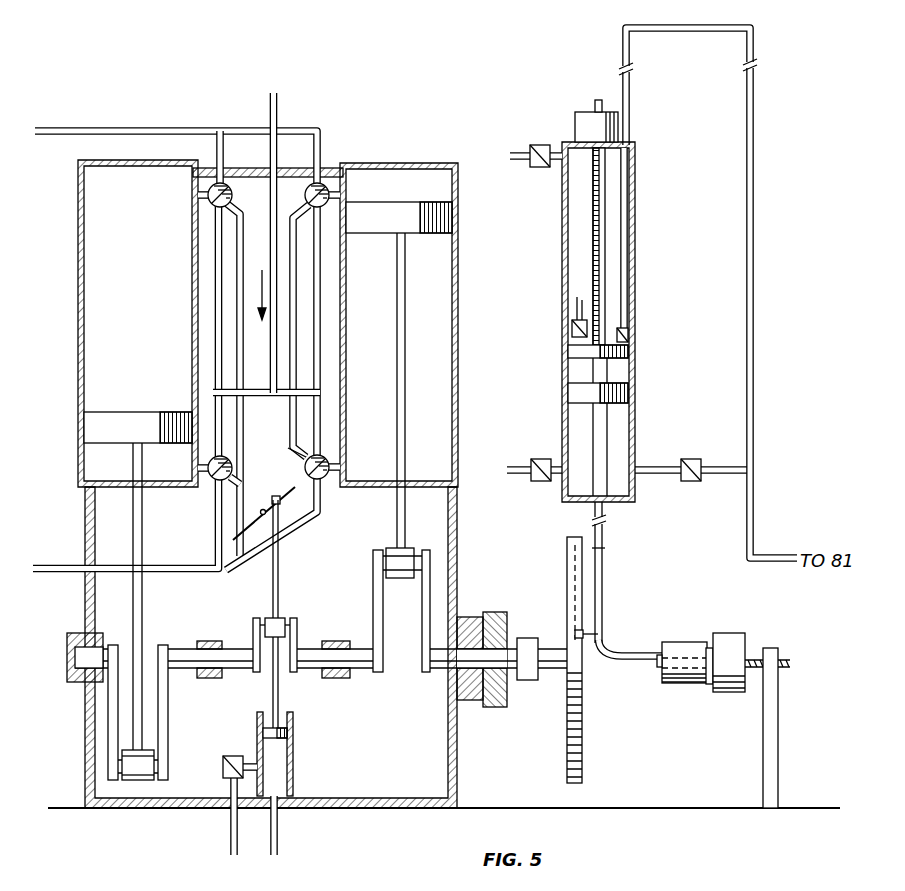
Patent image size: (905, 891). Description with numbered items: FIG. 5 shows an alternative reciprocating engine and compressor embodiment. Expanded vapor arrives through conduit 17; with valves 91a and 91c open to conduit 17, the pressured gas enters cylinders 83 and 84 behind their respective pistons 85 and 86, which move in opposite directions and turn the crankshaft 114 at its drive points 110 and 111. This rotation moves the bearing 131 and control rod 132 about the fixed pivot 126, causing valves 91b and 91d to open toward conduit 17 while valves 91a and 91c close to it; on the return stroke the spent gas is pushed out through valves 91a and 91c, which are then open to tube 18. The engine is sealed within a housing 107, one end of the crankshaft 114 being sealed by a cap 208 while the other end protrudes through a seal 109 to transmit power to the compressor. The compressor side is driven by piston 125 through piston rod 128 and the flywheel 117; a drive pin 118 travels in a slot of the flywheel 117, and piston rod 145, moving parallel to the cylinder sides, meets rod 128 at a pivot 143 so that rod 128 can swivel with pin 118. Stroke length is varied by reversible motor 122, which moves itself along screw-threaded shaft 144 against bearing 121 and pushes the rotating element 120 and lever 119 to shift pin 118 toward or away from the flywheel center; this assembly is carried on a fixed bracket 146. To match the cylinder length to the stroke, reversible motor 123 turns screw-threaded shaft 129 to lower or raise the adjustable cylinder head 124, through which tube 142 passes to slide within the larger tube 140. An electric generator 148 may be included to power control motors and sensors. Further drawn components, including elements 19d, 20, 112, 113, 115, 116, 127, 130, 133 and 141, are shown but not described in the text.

The conduit 17 is at (279, 105).
The tube 18 is at (105, 128).
The check valve 19d is at (231, 845).
The outlet pipe 20 is at (280, 840).
The cylinder 83 is at (84, 182).
The cylinder 84 is at (418, 180).
The piston 85 is at (108, 420).
The piston 86 is at (400, 218).
The valve 91a is at (322, 207).
The valve 91b is at (330, 455).
The valve 91c is at (213, 478).
The valve 91d is at (209, 205).
The housing 107 is at (300, 170).
The seal 109 is at (470, 616).
The crankshaft drive point 110 is at (168, 758).
The crankshaft drive point 111 is at (386, 560).
The bearing 112 is at (207, 678).
The bearing 113 is at (338, 678).
The crankshaft 114 is at (180, 640).
The pump cylinder 115 is at (293, 760).
The coupling 116 is at (528, 638).
The flywheel 117 is at (567, 560).
The drive pin 118 is at (600, 640).
The lever 119 is at (635, 650).
The rotating element 120 is at (676, 690).
The bearing 121 is at (709, 690).
The reversible motor 122 is at (730, 640).
The reversible motor 123 is at (590, 110).
The adjustable cylinder head 124 is at (572, 352).
The piston 125 is at (572, 390).
The fixed pivot 126 is at (262, 509).
The switch 127 is at (575, 312).
The piston rod 128 is at (604, 596).
The screw-threaded shaft 129 is at (608, 250).
The valve 130 is at (543, 144).
The bearing 131 is at (285, 625).
The control rod 132 is at (280, 500).
The rod 133 is at (281, 582).
The larger tube 140 is at (623, 35).
The pipe 141 is at (755, 176).
The tube 142 is at (632, 188).
The pivot 143 is at (606, 550).
The screw-threaded shaft 144 is at (785, 655).
The piston rod 145 is at (606, 516).
The fixed bracket 146 is at (778, 728).
The electric generator 148 is at (495, 708).
The cap 208 is at (67, 645).